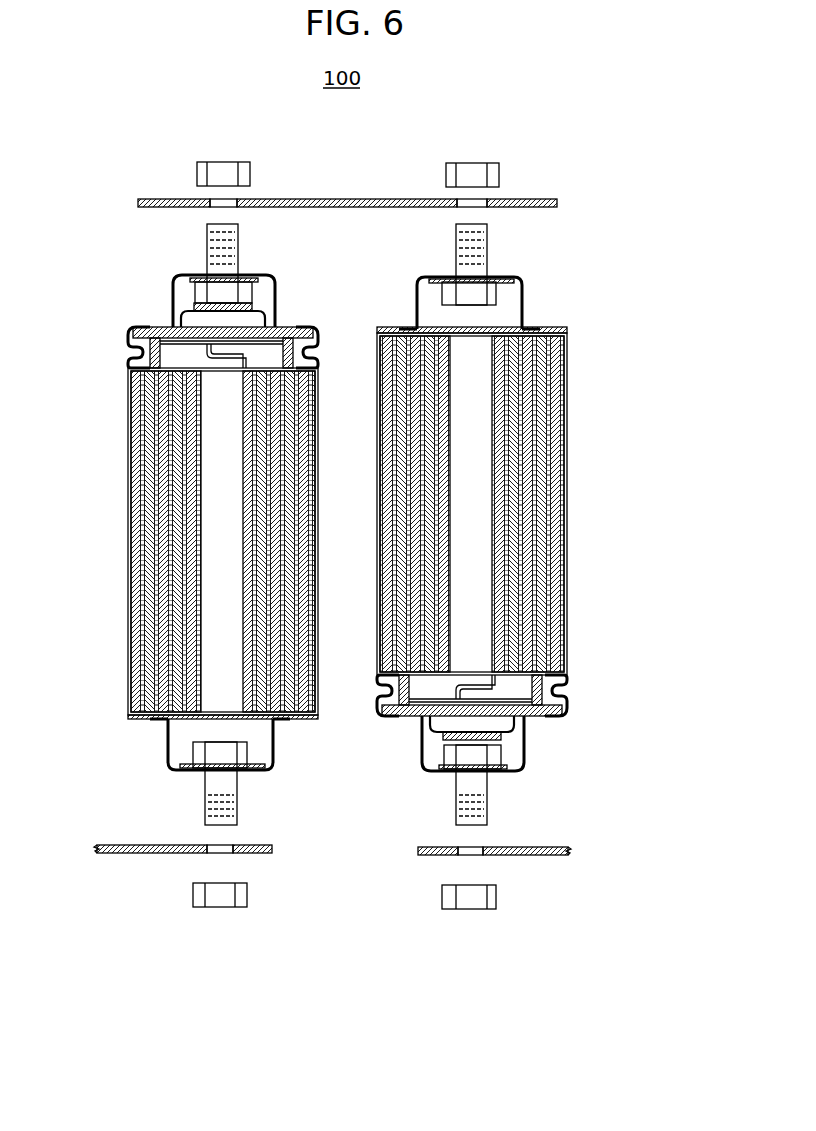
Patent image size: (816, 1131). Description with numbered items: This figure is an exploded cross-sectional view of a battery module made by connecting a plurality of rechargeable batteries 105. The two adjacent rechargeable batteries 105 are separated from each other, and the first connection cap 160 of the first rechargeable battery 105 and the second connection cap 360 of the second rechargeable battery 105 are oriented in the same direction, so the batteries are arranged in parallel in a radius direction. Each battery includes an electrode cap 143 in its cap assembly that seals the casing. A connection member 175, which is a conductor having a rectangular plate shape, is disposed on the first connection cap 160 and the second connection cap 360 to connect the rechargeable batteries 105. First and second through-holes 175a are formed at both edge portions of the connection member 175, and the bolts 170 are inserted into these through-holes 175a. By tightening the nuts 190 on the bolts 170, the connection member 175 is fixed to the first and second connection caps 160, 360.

The rechargeable battery 105 is at (126, 494).
The electrode cap 143 is at (182, 312).
The first connection cap 160 is at (279, 292).
The bolt 170 is at (203, 255).
The connection member 175 is at (345, 199).
The through-hole 175a is at (210, 199).
The nut 190 is at (225, 168).
The second connection cap 360 is at (167, 765).